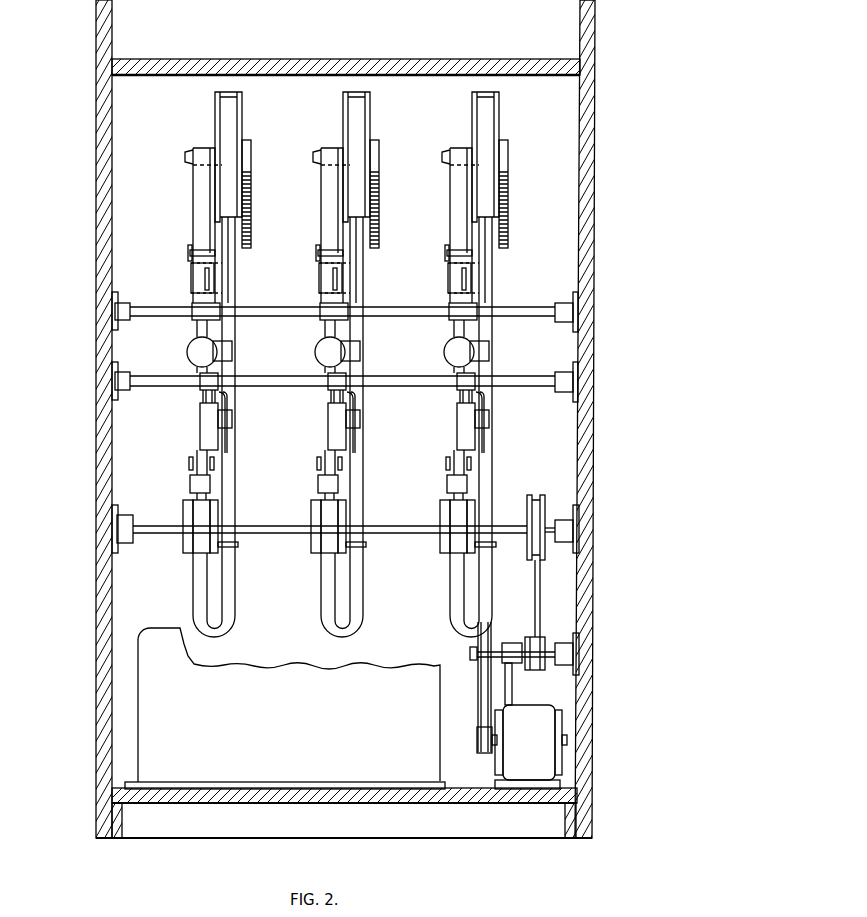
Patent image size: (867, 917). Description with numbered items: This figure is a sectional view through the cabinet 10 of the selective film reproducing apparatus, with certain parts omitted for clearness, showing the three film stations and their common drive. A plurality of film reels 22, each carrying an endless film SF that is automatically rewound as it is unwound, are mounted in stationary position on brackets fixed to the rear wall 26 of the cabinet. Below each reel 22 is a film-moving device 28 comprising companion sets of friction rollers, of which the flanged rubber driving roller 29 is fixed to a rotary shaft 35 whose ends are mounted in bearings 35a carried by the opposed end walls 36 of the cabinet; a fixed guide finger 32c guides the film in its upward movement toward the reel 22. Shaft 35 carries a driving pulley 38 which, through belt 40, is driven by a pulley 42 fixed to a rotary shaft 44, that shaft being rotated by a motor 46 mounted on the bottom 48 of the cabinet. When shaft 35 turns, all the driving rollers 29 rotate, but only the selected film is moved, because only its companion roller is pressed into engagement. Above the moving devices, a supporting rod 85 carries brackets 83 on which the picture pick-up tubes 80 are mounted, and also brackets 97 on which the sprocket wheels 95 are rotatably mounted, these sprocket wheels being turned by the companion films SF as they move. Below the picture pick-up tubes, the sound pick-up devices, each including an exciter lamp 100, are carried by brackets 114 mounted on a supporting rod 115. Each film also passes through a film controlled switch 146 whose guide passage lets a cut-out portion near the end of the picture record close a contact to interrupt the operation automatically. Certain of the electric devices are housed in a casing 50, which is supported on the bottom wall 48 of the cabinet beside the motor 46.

The cabinet 10 is at (340, 419).
The film reel 22 is at (243, 123).
The rear wall 26 is at (553, 216).
The end wall 36 is at (100, 460).
The sprocket wheel 95 is at (191, 277).
The bracket 97 is at (215, 290).
The bracket 83 is at (215, 312).
The supporting rod 85 is at (173, 318).
The pick-up tube 80 is at (186, 359).
The bracket 114 is at (205, 386).
The supporting rod 115 is at (540, 388).
The exciter lamp 100 is at (205, 428).
The film controlled switch 146 is at (206, 487).
The film-moving device 28 is at (183, 519).
The roller 29 is at (200, 553).
The rotary shaft 35 is at (502, 530).
The bearing 35a is at (123, 520).
The guide finger 32c is at (238, 549).
The film SF is at (233, 269).
The driving pulley 38 is at (545, 512).
The belt 40 is at (538, 600).
The rotary shaft 44 is at (545, 650).
The pulley 42 is at (542, 670).
The motor 46 is at (545, 728).
The bottom 48 is at (470, 797).
The casing 50 is at (271, 676).